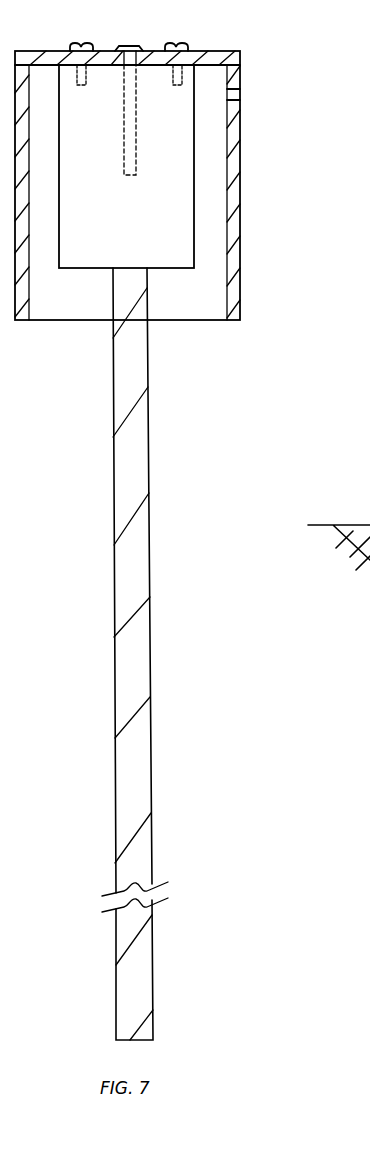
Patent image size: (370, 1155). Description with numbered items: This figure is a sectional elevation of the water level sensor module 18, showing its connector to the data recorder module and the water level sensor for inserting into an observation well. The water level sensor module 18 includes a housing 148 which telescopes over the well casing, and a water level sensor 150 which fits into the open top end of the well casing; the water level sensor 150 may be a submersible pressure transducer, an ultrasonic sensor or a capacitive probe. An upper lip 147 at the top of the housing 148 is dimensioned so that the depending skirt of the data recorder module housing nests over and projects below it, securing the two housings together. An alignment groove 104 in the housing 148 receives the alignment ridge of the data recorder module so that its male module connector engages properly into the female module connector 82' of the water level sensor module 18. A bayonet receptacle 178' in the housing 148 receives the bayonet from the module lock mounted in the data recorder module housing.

The female module connector 82' is at (177, 34).
The upper lip 147 is at (242, 53).
The bayonet receptacle 178' is at (280, 87).
The water level sensor module housing 148 is at (238, 207).
The alignment groove 104 is at (125, 148).
The water level sensor module 18 is at (212, 305).
The water level sensor 150 is at (138, 754).